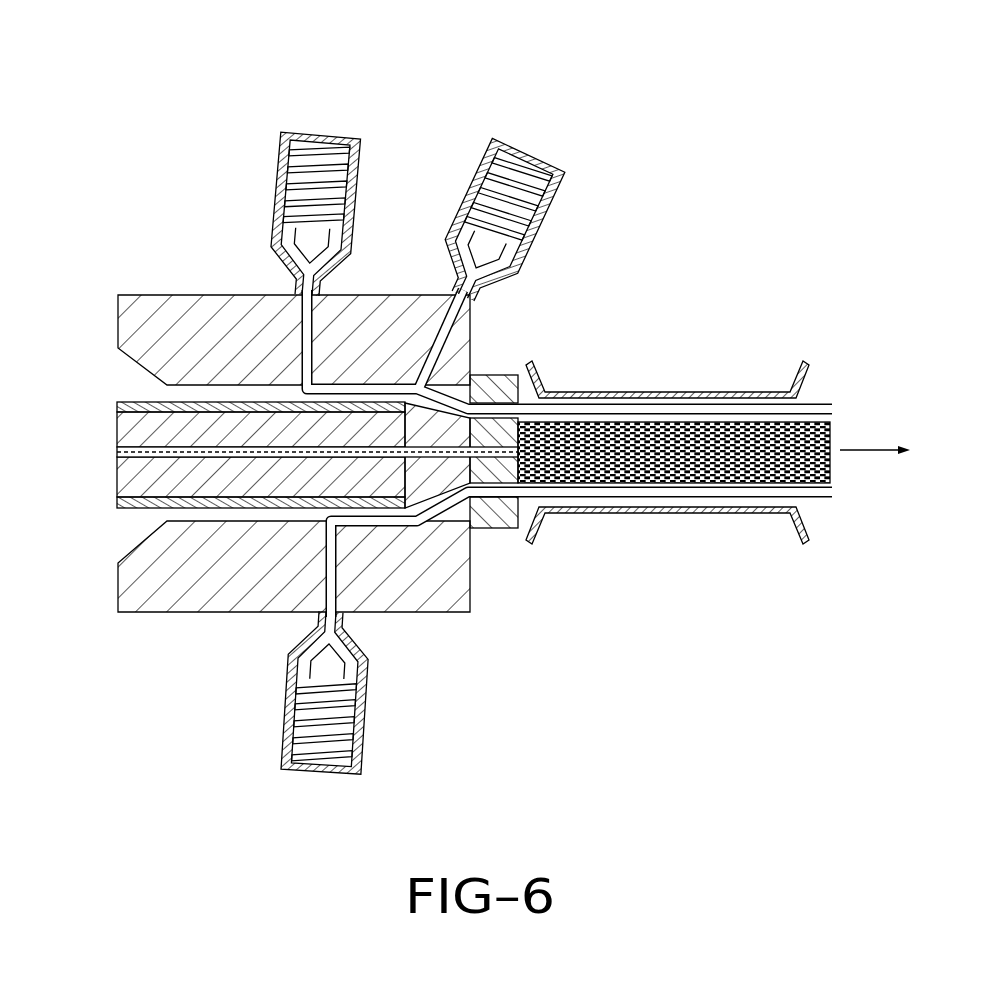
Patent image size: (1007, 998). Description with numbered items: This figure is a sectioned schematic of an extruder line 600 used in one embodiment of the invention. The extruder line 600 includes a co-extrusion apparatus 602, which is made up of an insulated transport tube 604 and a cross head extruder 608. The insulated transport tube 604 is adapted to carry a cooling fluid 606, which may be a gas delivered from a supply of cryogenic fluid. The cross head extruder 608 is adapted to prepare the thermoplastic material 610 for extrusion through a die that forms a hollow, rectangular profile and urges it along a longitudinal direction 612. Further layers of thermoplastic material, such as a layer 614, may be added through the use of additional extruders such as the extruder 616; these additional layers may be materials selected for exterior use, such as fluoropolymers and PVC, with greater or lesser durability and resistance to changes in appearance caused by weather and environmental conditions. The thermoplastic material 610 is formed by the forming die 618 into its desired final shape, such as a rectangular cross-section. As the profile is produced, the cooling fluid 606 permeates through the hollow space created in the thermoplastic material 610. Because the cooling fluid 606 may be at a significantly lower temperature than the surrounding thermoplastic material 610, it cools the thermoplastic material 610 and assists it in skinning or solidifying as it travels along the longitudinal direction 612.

The extruder line 600 is at (475, 393).
The co-extrusion apparatus 602 is at (432, 672).
The insulated transport tube 604 is at (140, 475).
The cooling fluid 606 is at (127, 450).
The cross head extruder 608 is at (360, 178).
The thermoplastic material 610 is at (293, 266).
The longitudinal direction 612 is at (867, 455).
The layer 614 is at (806, 397).
The extruder 616 is at (547, 213).
The forming die 618 is at (487, 372).